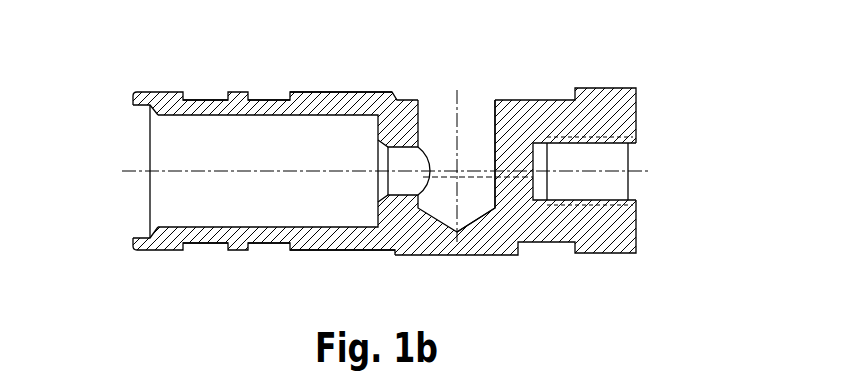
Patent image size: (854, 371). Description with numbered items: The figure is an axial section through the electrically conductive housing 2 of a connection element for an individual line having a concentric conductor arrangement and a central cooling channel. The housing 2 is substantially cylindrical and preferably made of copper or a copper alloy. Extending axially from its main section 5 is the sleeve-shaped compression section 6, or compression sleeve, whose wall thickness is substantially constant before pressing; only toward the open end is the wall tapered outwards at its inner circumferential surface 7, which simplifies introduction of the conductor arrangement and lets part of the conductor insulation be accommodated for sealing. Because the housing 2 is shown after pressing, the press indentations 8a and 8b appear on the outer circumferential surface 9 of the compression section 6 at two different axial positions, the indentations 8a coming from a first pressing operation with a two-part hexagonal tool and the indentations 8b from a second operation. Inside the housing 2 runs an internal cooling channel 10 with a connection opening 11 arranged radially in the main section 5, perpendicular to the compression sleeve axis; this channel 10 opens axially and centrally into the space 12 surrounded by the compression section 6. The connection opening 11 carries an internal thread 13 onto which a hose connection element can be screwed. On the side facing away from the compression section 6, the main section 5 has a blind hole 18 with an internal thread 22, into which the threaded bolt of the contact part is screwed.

The electrically conductive housing 2 is at (92, 101).
The main section 5 is at (380, 267).
The sleeve-shaped compression section 6 is at (140, 265).
The inner circumferential surface 7 is at (218, 115).
The press indentations 8a is at (268, 100).
The press indentations 8b is at (217, 100).
The outer circumferential surface 9 is at (332, 92).
The internal cooling channel 10 is at (488, 158).
The connection opening 11 is at (463, 99).
The space 12 is at (198, 180).
The internal thread 13 is at (417, 140).
The blind hole 18 is at (583, 157).
The internal thread 22 is at (590, 199).